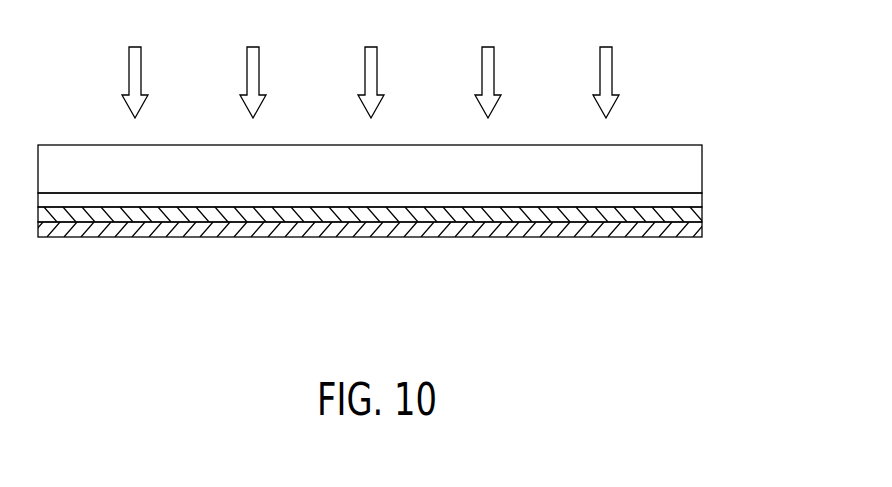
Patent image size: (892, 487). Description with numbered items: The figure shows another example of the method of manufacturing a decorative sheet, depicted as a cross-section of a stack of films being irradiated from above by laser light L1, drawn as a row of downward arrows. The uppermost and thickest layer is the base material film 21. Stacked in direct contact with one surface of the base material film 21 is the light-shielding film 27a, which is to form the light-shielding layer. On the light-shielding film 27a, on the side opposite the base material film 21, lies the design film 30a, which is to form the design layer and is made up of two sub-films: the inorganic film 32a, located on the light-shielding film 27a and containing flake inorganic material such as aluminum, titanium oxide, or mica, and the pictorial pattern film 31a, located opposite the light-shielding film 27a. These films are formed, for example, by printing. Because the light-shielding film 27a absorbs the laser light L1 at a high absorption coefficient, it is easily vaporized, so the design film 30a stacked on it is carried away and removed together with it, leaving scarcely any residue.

The laser light L1 is at (370, 63).
The base material film 21 is at (703, 158).
The light-shielding film 27a is at (703, 198).
The design film 30a is at (428, 242).
The inorganic film 32a is at (703, 212).
The pictorial pattern film 31a is at (703, 230).